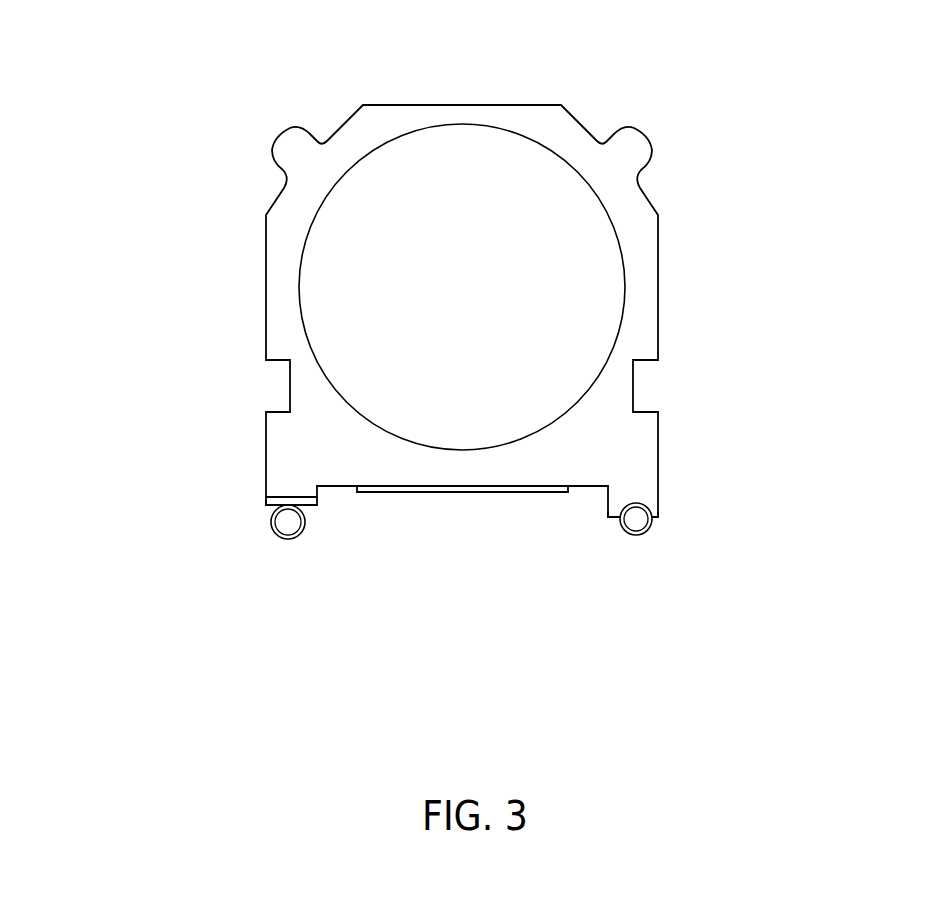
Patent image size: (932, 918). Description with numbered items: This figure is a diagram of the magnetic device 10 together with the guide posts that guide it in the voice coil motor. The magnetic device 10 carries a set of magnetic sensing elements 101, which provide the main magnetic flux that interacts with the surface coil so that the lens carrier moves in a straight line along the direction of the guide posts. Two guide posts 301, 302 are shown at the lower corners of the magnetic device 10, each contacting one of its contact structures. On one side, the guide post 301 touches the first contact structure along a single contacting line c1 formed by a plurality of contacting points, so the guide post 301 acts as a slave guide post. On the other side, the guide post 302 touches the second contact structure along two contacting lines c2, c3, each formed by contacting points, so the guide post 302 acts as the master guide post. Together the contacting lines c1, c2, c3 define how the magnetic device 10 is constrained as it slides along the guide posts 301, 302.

The magnetic device 10 is at (735, 138).
The set of magnetic sensing elements 101 is at (450, 493).
The guide post 301 is at (288, 527).
The guide post 302 is at (635, 528).
The contacting line c1 is at (268, 508).
The contacting line c2 is at (622, 518).
The contacting line c3 is at (653, 518).